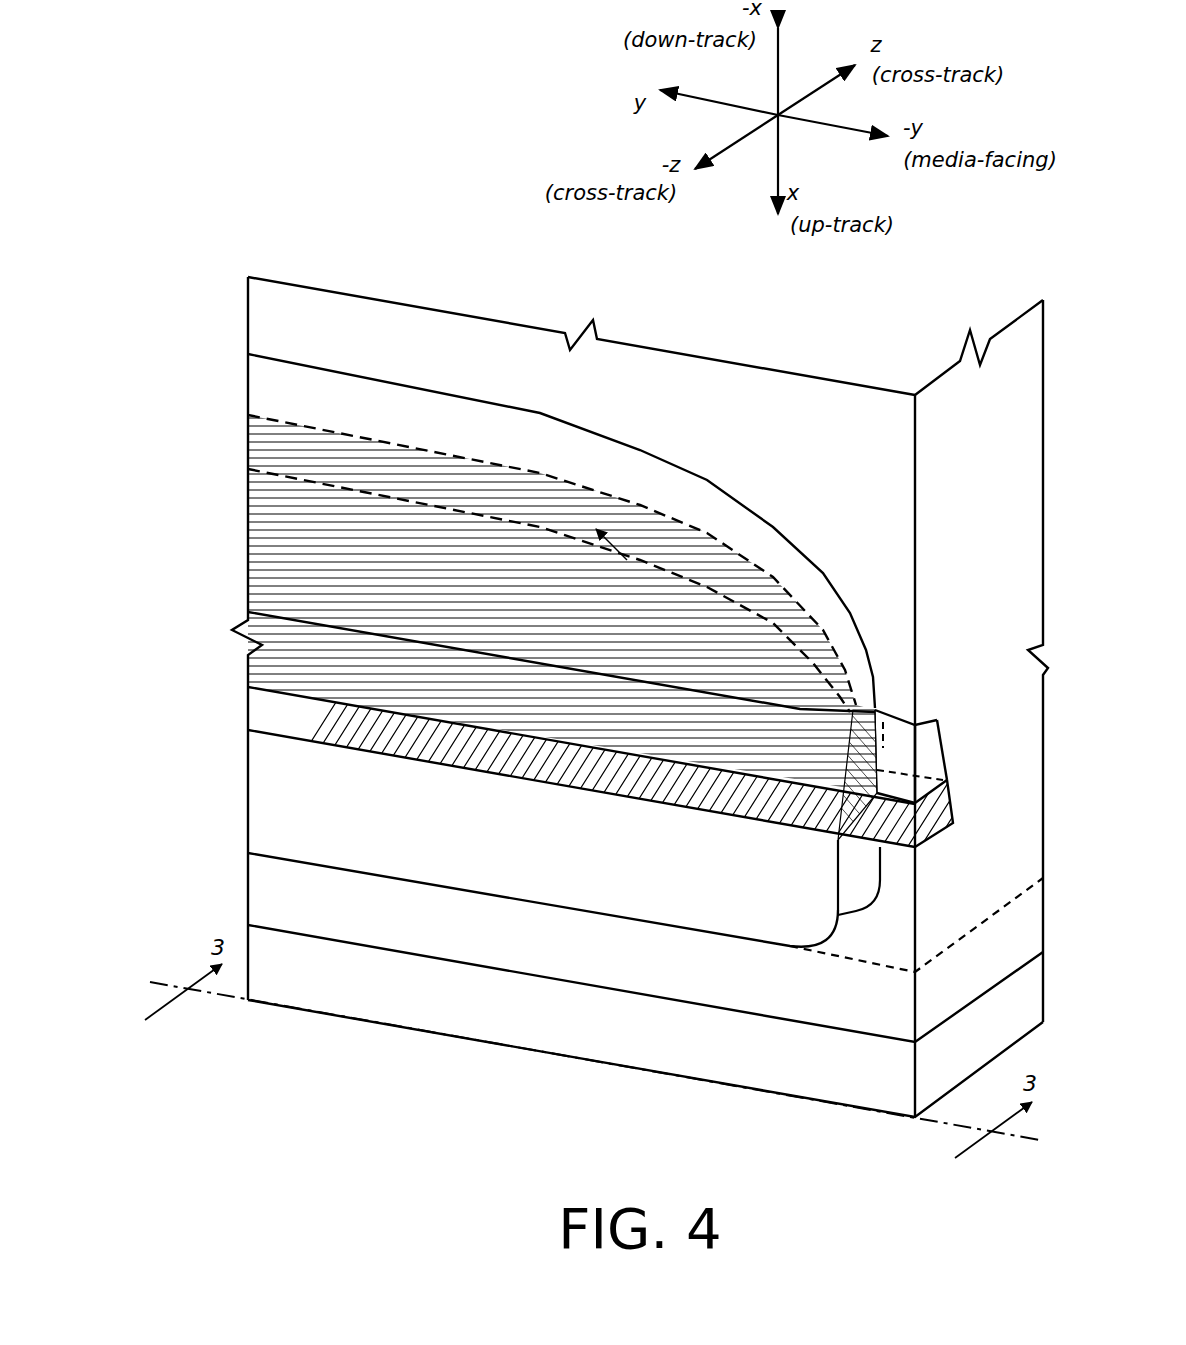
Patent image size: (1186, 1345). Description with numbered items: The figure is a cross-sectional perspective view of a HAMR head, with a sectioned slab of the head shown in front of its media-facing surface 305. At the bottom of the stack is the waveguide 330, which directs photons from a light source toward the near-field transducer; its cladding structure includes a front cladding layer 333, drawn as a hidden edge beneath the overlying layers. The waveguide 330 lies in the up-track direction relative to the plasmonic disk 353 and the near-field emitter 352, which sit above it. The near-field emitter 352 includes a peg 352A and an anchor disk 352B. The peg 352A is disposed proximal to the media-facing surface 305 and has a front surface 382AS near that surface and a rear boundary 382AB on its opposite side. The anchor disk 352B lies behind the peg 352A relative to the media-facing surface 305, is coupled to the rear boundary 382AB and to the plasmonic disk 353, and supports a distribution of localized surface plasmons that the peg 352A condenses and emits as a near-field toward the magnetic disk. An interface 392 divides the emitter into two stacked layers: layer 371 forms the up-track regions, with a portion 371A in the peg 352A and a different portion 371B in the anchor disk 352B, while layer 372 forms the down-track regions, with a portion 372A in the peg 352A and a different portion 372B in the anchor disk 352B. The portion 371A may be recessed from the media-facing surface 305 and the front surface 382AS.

The media-facing surface 305 is at (928, 430).
The near-field emitter 352 is at (762, 463).
The anchor disk 352B is at (577, 440).
The peg 352A is at (921, 720).
The layer 372 is at (522, 712).
The portion of layer 372 372A is at (897, 703).
The portion of layer 372 372B is at (843, 579).
The layer 371 is at (512, 772).
The portion of layer 371 371A is at (898, 852).
The portion of layer 371 371B is at (601, 798).
The front surface 382AS is at (958, 761).
The rear boundary 382AB is at (836, 779).
The interface 392 is at (470, 453).
The plasmonic disk 353 is at (517, 858).
The front cladding layer 333 is at (855, 948).
The waveguide 330 is at (560, 965).